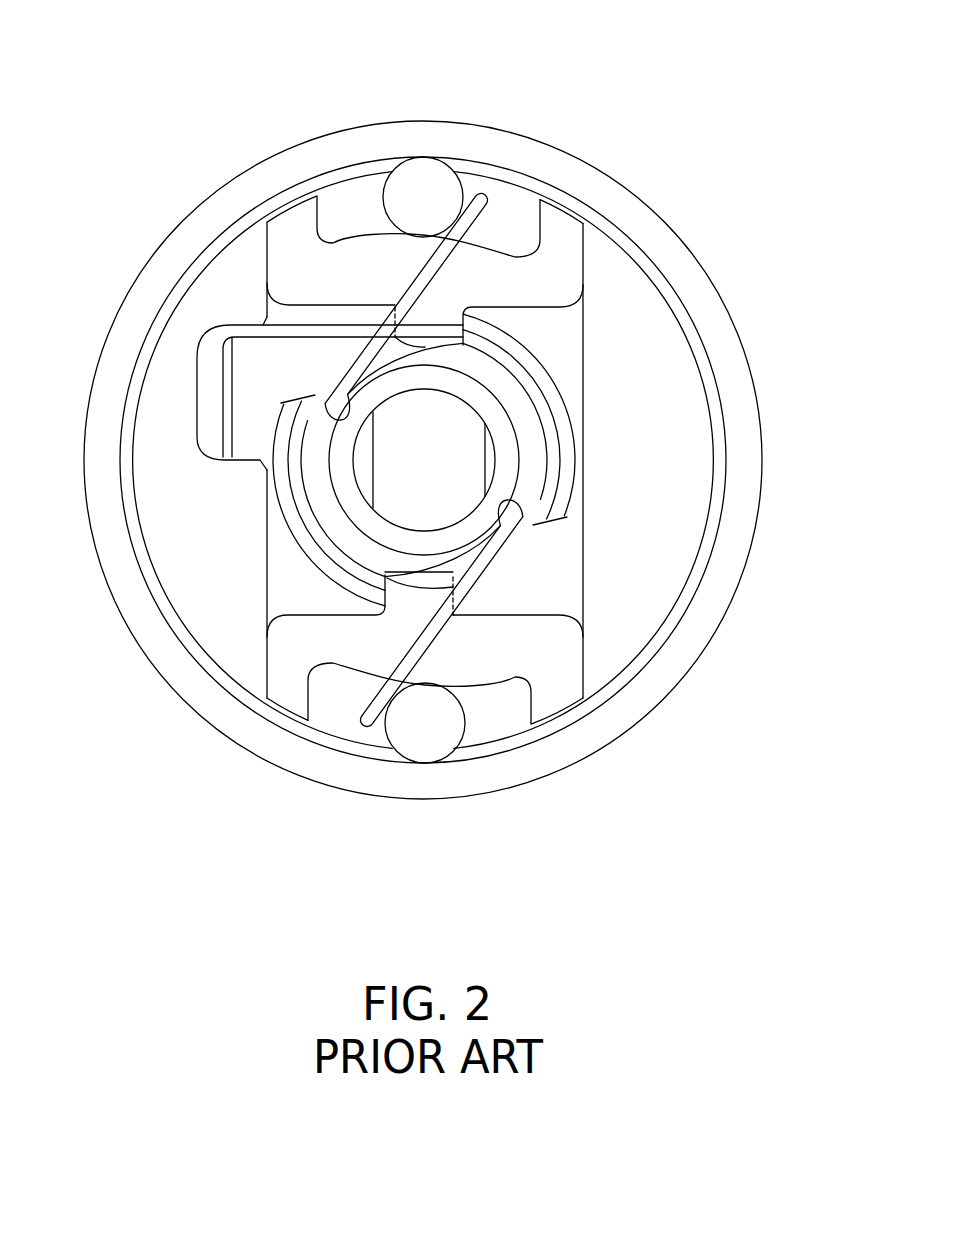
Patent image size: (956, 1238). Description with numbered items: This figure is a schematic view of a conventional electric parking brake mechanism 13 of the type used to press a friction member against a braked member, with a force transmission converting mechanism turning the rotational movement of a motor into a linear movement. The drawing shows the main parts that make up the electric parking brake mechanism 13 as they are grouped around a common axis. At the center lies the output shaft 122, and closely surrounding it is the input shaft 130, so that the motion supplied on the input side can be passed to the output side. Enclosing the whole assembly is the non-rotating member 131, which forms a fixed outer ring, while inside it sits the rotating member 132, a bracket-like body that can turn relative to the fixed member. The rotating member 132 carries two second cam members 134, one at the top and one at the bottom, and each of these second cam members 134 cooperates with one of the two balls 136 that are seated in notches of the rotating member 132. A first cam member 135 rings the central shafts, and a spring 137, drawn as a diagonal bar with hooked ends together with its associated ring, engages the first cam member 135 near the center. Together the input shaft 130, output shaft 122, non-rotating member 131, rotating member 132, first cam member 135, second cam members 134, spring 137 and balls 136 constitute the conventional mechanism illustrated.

The electric parking brake mechanism 13 is at (597, 150).
The output shaft 122 is at (470, 467).
The input shaft 130 is at (365, 520).
The non-rotating member 131 is at (717, 308).
The rotating member 132 is at (668, 552).
The second cam member 134 is at (555, 224).
The first cam member 135 is at (285, 507).
The ball 136 is at (421, 168).
The spring 137 is at (320, 533).